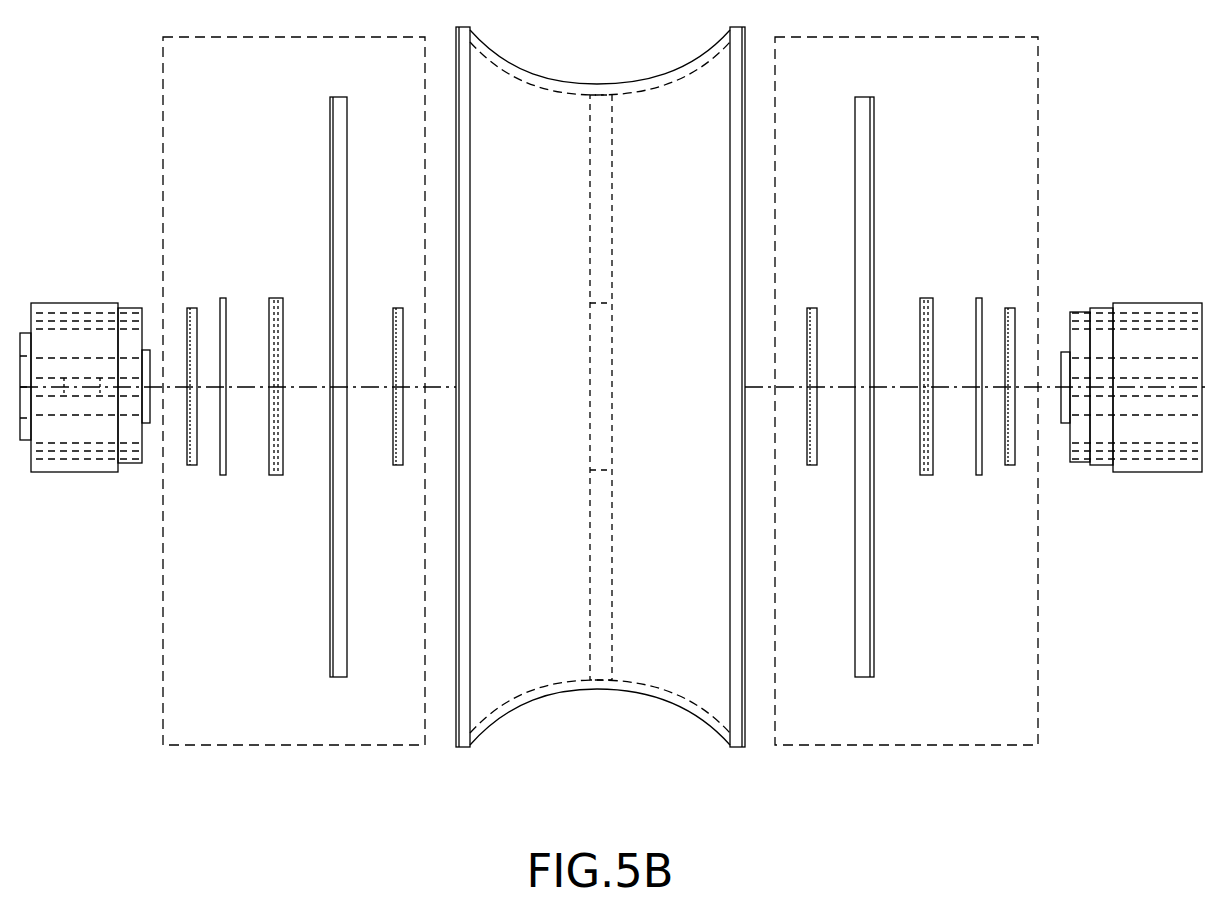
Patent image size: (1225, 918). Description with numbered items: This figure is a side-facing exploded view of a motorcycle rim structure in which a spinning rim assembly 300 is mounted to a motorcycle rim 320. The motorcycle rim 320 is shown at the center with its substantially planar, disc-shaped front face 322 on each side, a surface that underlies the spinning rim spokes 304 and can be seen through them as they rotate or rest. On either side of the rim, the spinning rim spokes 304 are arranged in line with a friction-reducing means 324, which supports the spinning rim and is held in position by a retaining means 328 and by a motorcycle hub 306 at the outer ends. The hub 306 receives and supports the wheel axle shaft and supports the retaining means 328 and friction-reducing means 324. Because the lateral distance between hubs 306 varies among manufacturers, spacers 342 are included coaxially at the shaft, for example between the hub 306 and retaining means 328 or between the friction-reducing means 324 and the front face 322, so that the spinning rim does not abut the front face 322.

The spinning rim assembly 300 is at (163, 110).
The spinning rim spokes 304 is at (337, 677).
The motorcycle hub 306 is at (72, 472).
The motorcycle rim 320 is at (597, 690).
The motorcycle rim front face 322 is at (456, 700).
The friction-reducing means 324 is at (276, 475).
The retaining means 328 is at (224, 475).
The spacer 342 is at (192, 308).